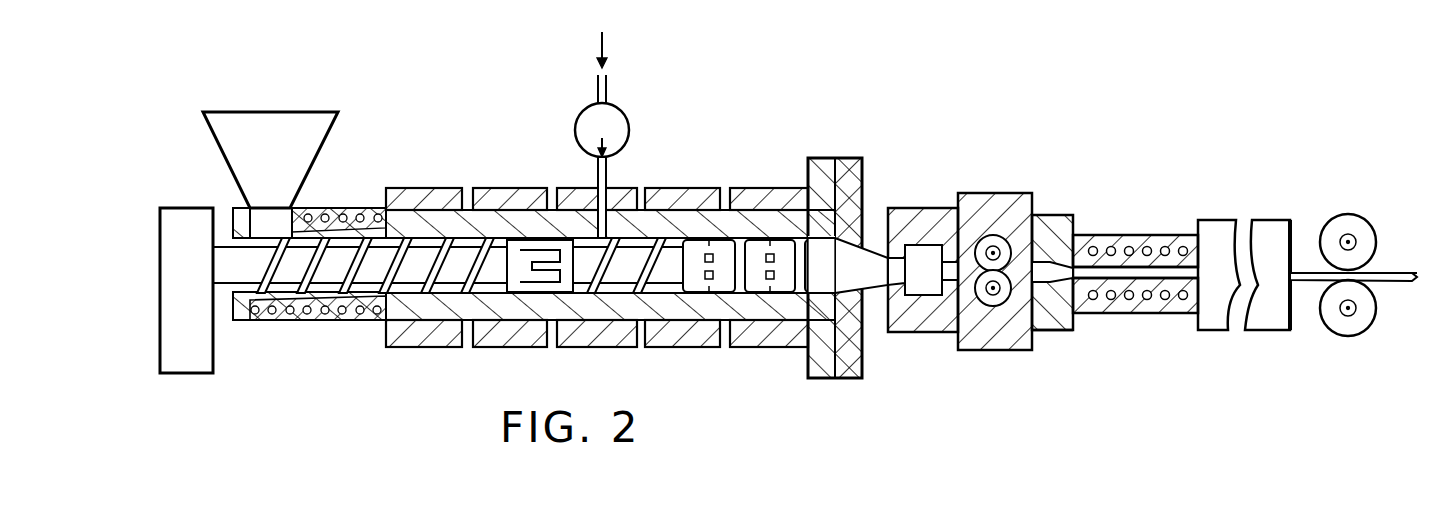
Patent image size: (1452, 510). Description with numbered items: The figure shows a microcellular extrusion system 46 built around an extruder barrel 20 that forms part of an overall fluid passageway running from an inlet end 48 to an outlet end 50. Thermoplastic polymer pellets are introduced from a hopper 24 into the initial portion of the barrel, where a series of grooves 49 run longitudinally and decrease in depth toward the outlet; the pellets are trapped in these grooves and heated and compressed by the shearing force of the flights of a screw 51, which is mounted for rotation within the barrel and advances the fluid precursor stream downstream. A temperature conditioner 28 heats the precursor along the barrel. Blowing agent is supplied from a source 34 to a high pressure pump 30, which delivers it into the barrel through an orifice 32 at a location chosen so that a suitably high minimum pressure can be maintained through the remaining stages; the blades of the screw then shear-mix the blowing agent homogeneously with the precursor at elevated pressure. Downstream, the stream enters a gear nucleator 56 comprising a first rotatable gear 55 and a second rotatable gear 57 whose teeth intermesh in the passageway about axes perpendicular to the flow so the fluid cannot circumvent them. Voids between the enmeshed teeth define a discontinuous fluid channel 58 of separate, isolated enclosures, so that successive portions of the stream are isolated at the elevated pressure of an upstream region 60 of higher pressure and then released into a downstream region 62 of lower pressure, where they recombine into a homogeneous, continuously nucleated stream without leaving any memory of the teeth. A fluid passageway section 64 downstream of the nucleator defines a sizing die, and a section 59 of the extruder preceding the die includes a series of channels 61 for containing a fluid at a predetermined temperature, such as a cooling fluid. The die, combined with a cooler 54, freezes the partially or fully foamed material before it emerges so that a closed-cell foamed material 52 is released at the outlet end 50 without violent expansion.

The extruder barrel 20 is at (418, 255).
The hopper 24 is at (288, 128).
The temperature conditioner 28 is at (510, 200).
The high pressure pump 30 is at (623, 130).
The orifice 32 is at (622, 192).
The source of blowing agent 34 is at (605, 50).
The system 46 is at (367, 104).
The inlet end 48 is at (265, 218).
The grooves 49 is at (279, 300).
The outlet end 50 is at (862, 280).
The screw 51 is at (415, 250).
The foamed material 52 is at (1403, 274).
The cooler 54 is at (1222, 232).
The first rotatable gear 55 is at (996, 245).
The gear nucleator 56 is at (982, 240).
The second rotatable gear 57 is at (993, 305).
The fluid channel 58 is at (1043, 322).
The section of the extruder 59 is at (1125, 250).
The region of higher pressure 60 is at (935, 232).
The channels 61 is at (1178, 300).
The region of lower pressure 62 is at (1045, 230).
The fluid passageway section 64 is at (1120, 292).